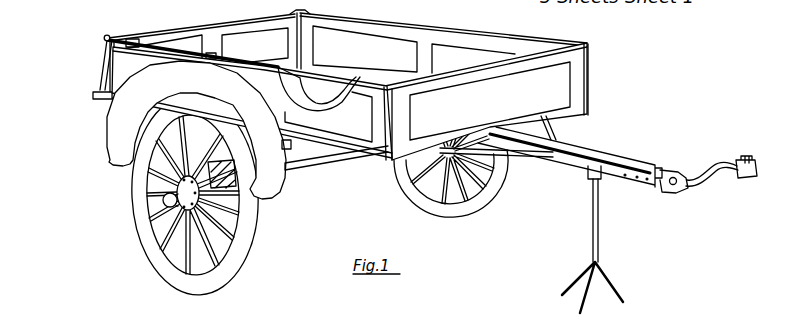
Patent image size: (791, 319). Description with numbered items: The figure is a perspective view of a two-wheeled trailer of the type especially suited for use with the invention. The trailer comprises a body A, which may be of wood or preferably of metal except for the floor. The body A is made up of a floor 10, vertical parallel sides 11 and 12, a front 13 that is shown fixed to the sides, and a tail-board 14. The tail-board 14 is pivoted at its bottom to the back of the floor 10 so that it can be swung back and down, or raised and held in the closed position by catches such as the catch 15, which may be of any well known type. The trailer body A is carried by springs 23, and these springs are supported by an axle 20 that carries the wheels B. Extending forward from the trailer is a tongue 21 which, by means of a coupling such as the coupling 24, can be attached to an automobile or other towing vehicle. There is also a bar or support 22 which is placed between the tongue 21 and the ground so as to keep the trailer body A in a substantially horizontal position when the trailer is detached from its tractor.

The body A is at (359, 82).
The wheels B is at (303, 195).
The floor 10 is at (327, 78).
The side 11 is at (252, 101).
The side 12 is at (414, 49).
The front 13 is at (486, 101).
The tail-board 14 is at (201, 53).
The catch 15 is at (109, 35).
The axle 20 is at (308, 166).
The tongue 21 is at (609, 153).
The bar or support 22 is at (600, 228).
The springs 23 is at (198, 162).
The coupling 24 is at (702, 187).